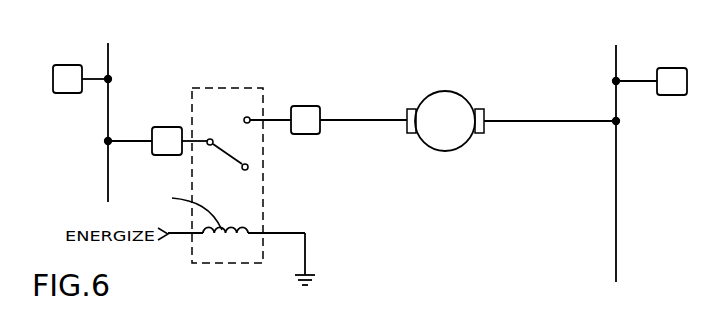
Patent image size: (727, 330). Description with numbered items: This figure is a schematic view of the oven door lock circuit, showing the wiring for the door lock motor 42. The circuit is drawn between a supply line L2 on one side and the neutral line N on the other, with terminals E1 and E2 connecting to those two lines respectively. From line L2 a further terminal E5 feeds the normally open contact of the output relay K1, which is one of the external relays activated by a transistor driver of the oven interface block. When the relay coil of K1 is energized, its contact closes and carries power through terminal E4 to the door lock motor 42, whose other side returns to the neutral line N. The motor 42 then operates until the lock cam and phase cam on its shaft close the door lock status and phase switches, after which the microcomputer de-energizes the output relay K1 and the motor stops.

The door lock motor 42 is at (450, 91).
The terminal E1 is at (80, 79).
The terminal E2 is at (651, 81).
The terminal E4 is at (349, 120).
The terminal E5 is at (157, 141).
The output relay K1 is at (263, 192).
The line L2 is at (108, 113).
The neutral line N is at (615, 154).